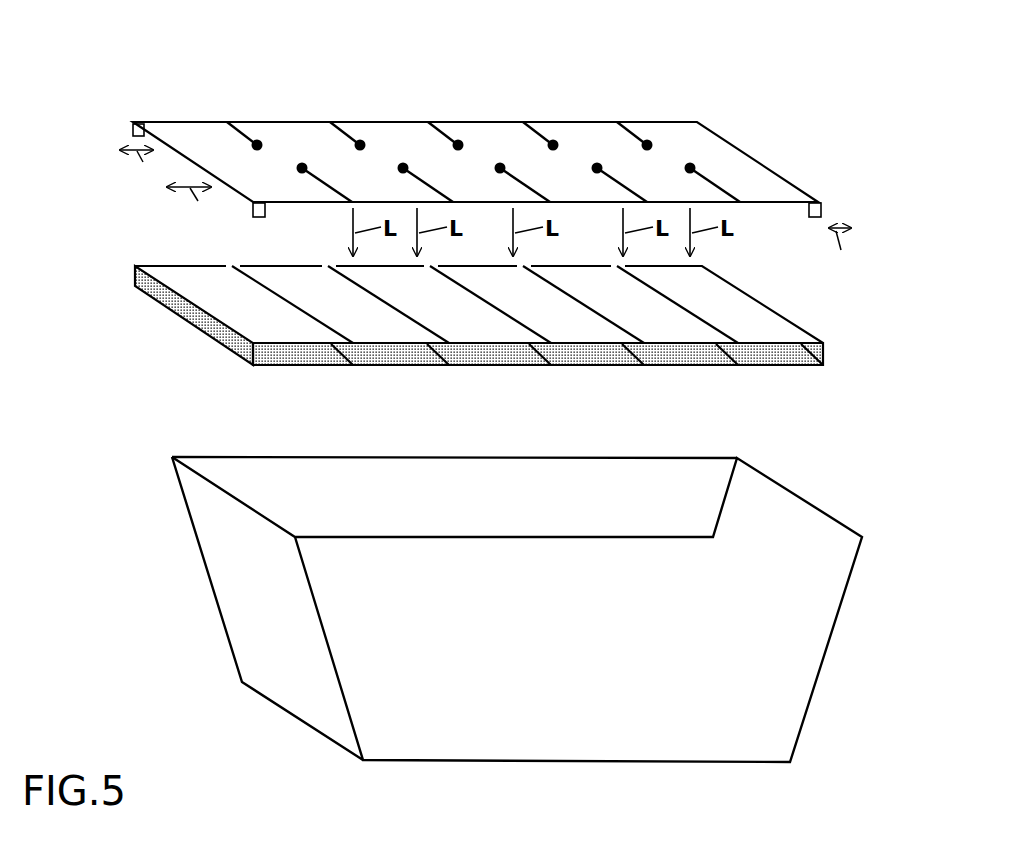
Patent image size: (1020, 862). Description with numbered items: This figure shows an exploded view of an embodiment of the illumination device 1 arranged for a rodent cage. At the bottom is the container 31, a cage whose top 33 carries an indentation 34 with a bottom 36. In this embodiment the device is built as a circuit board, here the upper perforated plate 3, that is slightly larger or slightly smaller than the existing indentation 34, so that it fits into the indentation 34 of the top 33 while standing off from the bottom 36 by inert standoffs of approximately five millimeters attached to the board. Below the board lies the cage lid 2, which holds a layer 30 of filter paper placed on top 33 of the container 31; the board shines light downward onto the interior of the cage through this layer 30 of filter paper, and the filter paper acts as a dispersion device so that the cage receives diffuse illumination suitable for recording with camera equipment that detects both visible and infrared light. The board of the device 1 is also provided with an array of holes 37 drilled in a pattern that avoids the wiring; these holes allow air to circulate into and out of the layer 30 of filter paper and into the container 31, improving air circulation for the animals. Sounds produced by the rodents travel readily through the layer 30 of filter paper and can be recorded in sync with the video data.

The dispensing device 1 is at (832, 203).
The cage lid 2 is at (172, 258).
The perforated plate 3 is at (163, 112).
The layer of filter paper 30 is at (173, 302).
The container 31 is at (245, 597).
The top of the container 33 is at (185, 480).
The indentation 34 is at (327, 456).
The bottom of the indentation 36 is at (220, 458).
The array of holes 37 is at (232, 123).